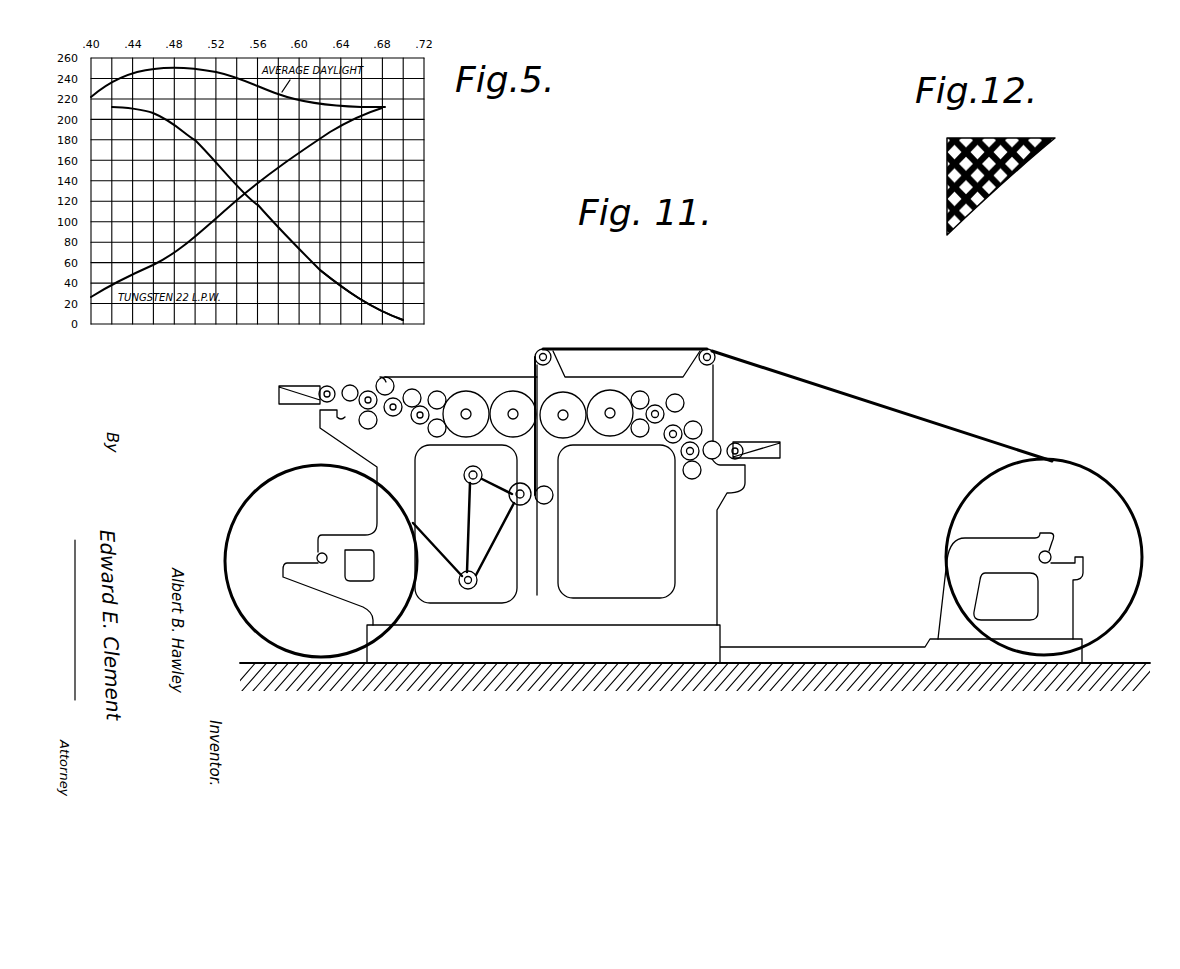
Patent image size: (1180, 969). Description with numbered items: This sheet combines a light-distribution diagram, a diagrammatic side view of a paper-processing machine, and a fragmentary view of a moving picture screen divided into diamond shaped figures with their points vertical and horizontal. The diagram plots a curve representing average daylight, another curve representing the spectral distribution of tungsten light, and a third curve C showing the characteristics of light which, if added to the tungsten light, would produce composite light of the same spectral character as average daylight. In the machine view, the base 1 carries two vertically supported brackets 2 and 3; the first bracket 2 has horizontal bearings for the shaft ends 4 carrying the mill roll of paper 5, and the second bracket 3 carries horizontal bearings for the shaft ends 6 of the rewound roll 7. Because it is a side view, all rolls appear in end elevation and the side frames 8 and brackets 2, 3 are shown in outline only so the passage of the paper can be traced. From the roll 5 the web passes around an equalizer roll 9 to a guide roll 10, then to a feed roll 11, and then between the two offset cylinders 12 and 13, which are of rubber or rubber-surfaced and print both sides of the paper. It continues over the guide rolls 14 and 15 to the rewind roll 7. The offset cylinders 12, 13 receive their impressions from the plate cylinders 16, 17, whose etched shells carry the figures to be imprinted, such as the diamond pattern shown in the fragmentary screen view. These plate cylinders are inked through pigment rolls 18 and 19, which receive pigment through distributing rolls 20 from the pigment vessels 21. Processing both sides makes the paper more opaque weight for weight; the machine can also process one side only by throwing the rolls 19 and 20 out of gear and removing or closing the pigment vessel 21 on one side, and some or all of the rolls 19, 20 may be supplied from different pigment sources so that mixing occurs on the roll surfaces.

In FIG. 11, the base 1 is at (832, 652).
In FIG. 11, the bracket 2 is at (300, 576).
In FIG. 11, the bracket 3 is at (960, 570).
In FIG. 11, the shaft ends 4 is at (316, 556).
In FIG. 11, the mill roll of paper 5 is at (262, 487).
In FIG. 11, the shaft ends 6 is at (1052, 556).
In FIG. 11, the rewound roll 7 is at (1105, 500).
In FIG. 11, the side frames 8 is at (704, 560).
In FIG. 11, the equalizer roll 9 is at (478, 580).
In FIG. 11, the guide roll 10 is at (467, 482).
In FIG. 11, the feed roll 11 is at (515, 500).
In FIG. 11, the offset cylinder 12 is at (513, 408).
In FIG. 11, the offset cylinder 13 is at (567, 430).
In FIG. 11, the guide roll 14 is at (543, 349).
In FIG. 11, the guide roll 15 is at (709, 349).
In FIG. 11, the plate cylinder 16 is at (466, 408).
In FIG. 11, the plate cylinder 17 is at (611, 404).
In FIG. 11, the pigment roll 18 is at (362, 424).
In FIG. 11, the pigment roll 19 is at (436, 392).
In FIG. 11, the distributing roll 20 is at (366, 392).
In FIG. 11, the pigment vessel 21 is at (305, 390).
In FIG. 5, the tungsten curve C is at (373, 298).